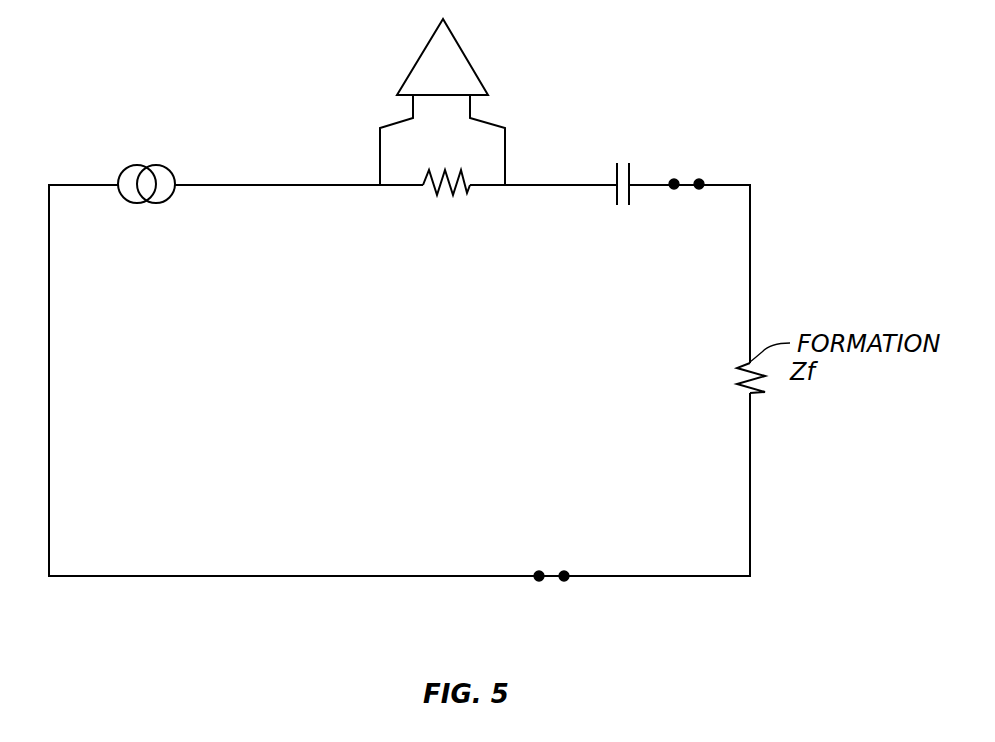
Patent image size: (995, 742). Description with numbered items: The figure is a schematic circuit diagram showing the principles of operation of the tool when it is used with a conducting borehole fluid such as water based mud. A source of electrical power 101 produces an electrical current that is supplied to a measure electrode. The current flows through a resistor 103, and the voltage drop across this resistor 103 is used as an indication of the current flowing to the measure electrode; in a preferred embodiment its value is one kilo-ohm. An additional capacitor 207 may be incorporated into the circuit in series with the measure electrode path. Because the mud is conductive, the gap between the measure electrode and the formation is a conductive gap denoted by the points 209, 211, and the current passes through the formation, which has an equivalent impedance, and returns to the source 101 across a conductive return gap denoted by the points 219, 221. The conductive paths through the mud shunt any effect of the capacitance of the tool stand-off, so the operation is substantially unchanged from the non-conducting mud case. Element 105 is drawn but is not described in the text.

The source of electrical power 101 is at (157, 164).
The resistor 103 is at (443, 190).
The antenna 105 is at (465, 53).
The capacitor 207 is at (615, 197).
The conductive gap point 209 is at (674, 178).
The conductive gap point 211 is at (699, 178).
The return gap point 219 is at (539, 582).
The return gap point 221 is at (564, 582).